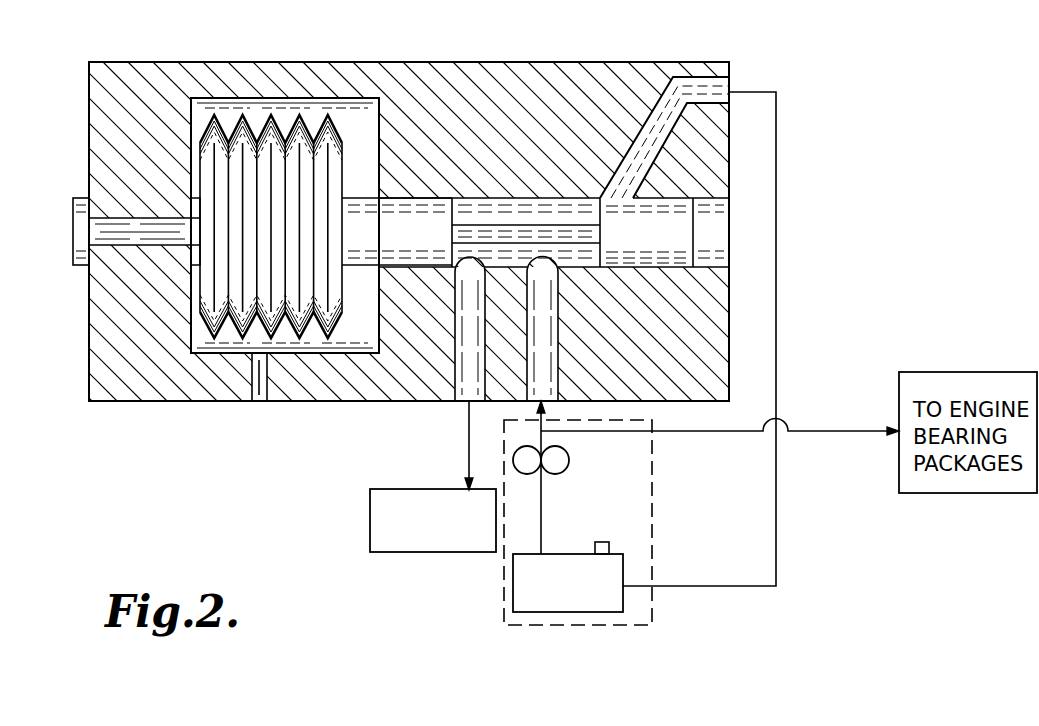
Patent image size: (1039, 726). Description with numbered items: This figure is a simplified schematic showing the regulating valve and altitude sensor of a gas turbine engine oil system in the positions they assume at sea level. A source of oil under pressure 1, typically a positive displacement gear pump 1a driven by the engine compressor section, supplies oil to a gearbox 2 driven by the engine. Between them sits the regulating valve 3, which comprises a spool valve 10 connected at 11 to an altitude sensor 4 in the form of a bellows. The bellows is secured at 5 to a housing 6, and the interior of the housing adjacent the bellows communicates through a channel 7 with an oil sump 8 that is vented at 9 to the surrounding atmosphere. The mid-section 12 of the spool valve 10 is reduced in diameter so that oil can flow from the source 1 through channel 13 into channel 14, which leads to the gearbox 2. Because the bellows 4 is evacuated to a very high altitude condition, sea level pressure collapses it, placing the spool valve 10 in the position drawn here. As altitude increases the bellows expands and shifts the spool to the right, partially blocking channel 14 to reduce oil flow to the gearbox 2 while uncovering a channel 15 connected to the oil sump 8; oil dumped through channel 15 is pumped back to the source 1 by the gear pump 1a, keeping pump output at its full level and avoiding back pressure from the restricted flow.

The source of oil under pressure 1 is at (603, 522).
The positive displacement gear pump 1a is at (570, 460).
The gearbox 2 is at (438, 532).
The regulating valve 3 is at (519, 231).
The altitude sensor 4 is at (278, 124).
The bellows securing point 5 is at (193, 217).
The housing 6 is at (223, 62).
The channel 7 is at (257, 398).
The oil sump 8 is at (573, 596).
The vent 9 is at (609, 546).
The spool valve 10 is at (655, 247).
The connection 11 is at (343, 228).
The mid-section 12 is at (533, 220).
The channel 13 is at (542, 388).
The channel 14 is at (468, 388).
The channel 15 is at (652, 107).